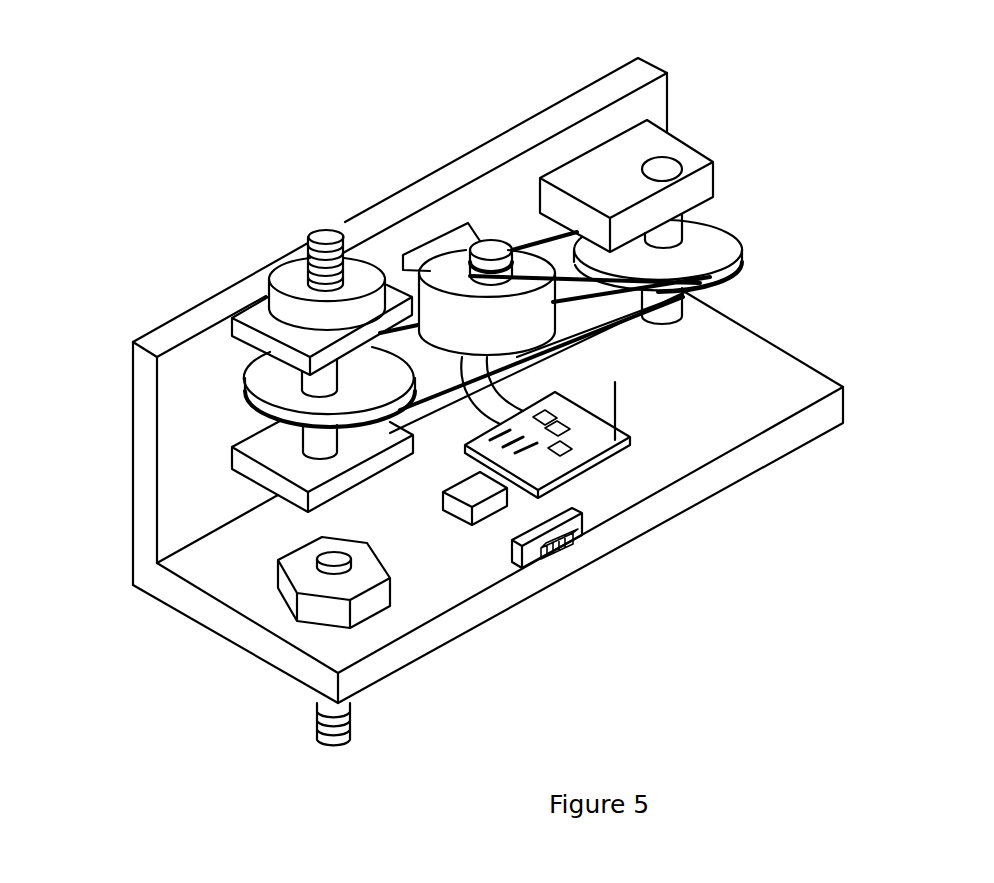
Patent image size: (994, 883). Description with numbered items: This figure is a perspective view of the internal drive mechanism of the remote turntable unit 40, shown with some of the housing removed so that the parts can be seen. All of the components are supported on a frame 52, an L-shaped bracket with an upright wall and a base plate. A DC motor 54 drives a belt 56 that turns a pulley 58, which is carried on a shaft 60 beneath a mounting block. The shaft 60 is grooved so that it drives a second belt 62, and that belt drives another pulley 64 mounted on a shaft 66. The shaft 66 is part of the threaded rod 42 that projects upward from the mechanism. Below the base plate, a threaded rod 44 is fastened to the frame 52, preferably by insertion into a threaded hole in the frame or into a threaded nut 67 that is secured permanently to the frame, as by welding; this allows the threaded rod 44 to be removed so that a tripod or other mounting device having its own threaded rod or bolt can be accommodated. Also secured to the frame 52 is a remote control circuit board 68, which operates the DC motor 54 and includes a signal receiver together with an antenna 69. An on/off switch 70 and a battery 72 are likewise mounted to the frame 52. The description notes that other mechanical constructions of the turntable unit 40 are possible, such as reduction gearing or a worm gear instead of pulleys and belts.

The turntable 40 is at (203, 74).
The threaded rod 42 is at (330, 230).
The threaded rod 44 is at (350, 727).
The frame 52 is at (455, 163).
The DC motor 54 is at (435, 256).
The belt 56 is at (742, 250).
The pulley 58 is at (722, 207).
The shaft 60 is at (684, 296).
The belt 62 is at (617, 327).
The pulley 64 is at (277, 420).
The shaft 66 is at (233, 458).
The threaded nut 67 is at (300, 617).
The remote control circuit board 68 is at (632, 437).
The antenna 69 is at (615, 410).
The on/off switch 70 is at (567, 547).
The battery 72 is at (443, 494).